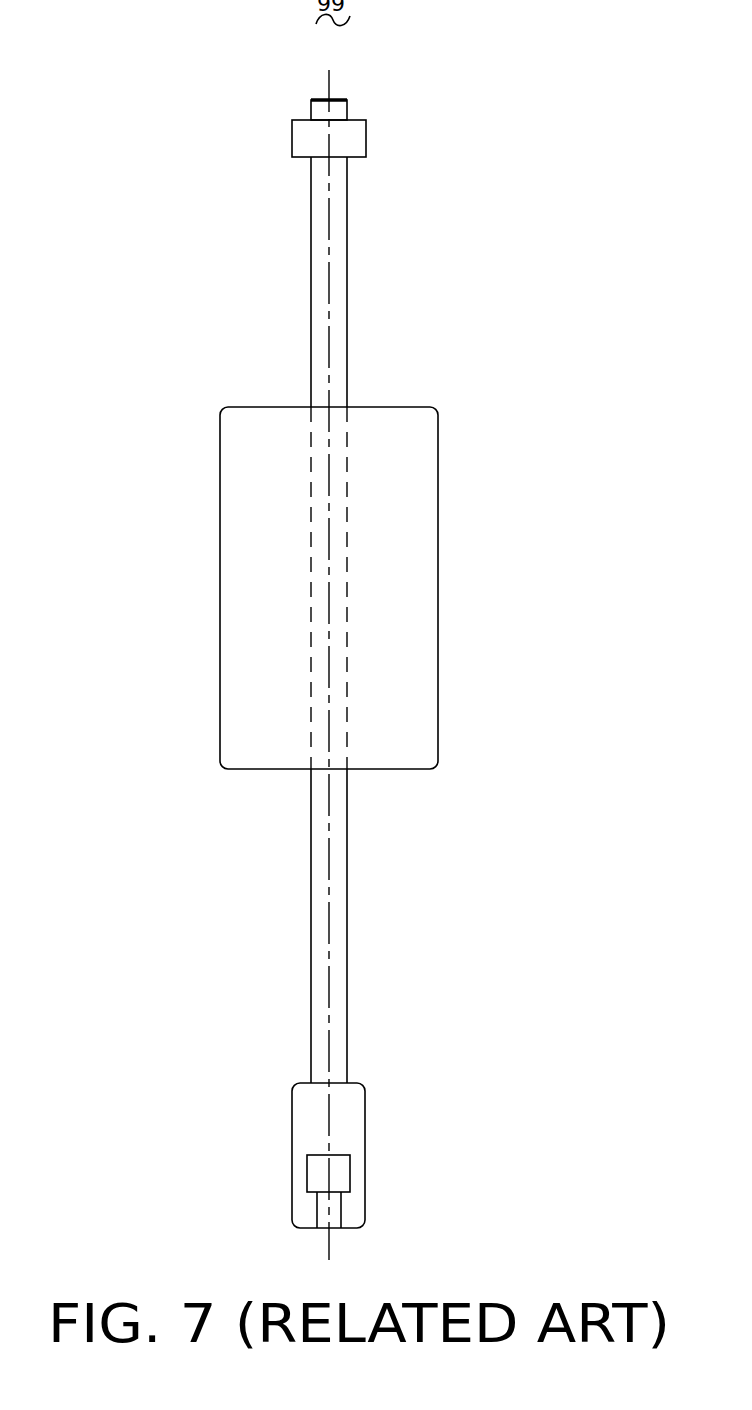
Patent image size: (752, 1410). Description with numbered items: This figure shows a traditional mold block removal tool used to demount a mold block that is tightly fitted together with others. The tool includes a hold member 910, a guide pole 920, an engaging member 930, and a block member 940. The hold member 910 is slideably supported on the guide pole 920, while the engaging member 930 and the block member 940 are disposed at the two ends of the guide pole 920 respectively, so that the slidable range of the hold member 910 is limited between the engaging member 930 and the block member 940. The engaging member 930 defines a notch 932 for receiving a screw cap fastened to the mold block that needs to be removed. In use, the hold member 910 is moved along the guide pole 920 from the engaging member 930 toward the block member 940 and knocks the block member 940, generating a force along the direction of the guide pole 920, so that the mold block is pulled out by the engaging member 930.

The hold member 910 is at (385, 585).
The guide pole 920 is at (338, 253).
The engaging member 930 is at (352, 1135).
The notch 932 is at (337, 1185).
The block member 940 is at (352, 138).